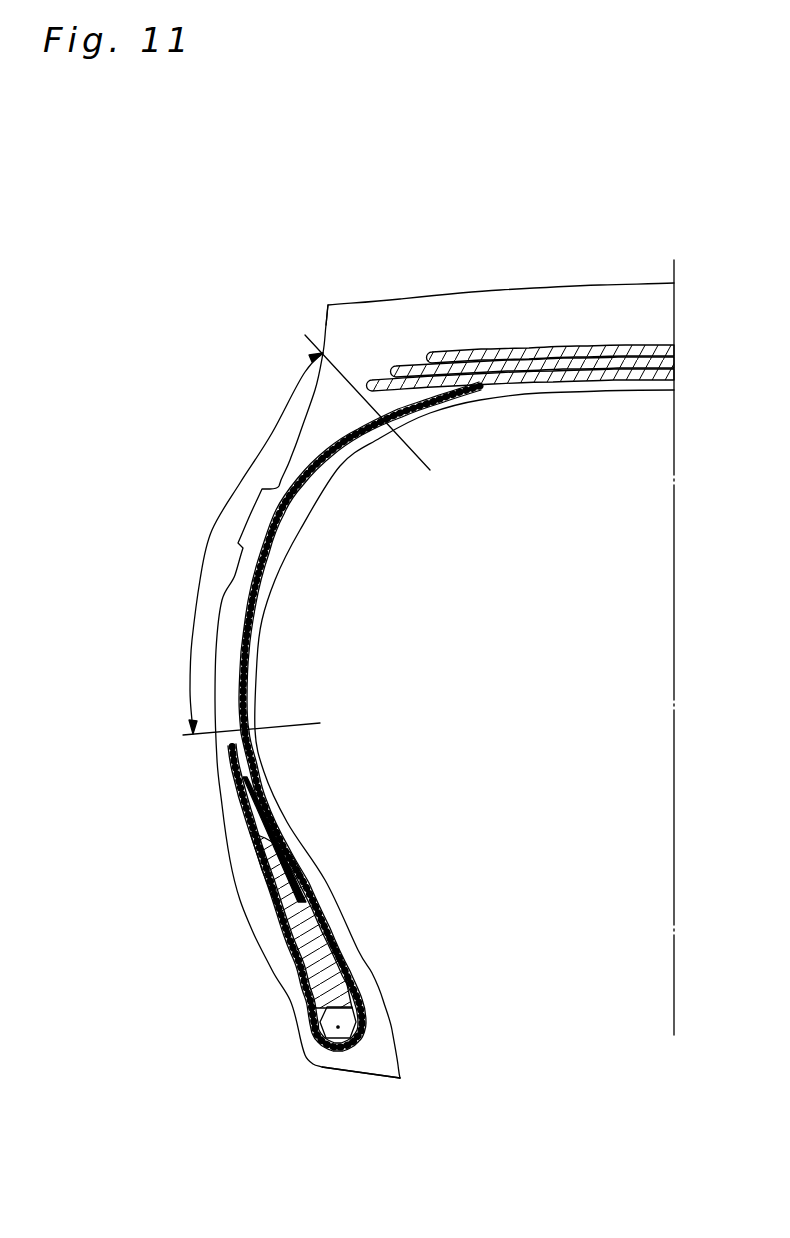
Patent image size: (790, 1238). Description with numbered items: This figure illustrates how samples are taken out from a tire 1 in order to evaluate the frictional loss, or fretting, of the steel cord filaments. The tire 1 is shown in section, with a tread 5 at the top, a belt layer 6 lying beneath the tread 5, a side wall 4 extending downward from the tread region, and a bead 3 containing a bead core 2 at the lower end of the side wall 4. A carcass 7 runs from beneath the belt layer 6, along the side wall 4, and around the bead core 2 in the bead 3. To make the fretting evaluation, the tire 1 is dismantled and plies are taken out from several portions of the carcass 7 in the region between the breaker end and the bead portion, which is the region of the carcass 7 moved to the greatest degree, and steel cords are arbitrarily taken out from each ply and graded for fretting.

The tire 1 is at (413, 662).
The bead core 2 is at (340, 1035).
The bead 3 is at (409, 1025).
The side wall 4 is at (208, 693).
The tread 5 is at (576, 270).
The belt layer 6 is at (681, 333).
The carcass 7 is at (248, 648).